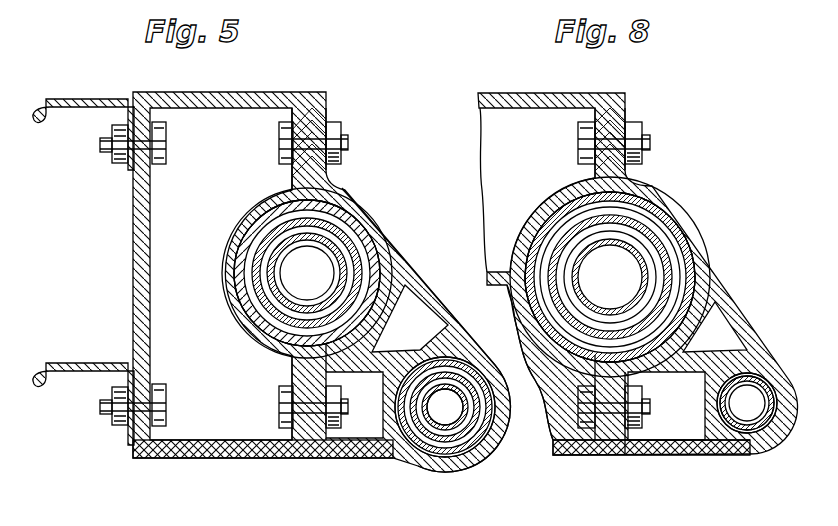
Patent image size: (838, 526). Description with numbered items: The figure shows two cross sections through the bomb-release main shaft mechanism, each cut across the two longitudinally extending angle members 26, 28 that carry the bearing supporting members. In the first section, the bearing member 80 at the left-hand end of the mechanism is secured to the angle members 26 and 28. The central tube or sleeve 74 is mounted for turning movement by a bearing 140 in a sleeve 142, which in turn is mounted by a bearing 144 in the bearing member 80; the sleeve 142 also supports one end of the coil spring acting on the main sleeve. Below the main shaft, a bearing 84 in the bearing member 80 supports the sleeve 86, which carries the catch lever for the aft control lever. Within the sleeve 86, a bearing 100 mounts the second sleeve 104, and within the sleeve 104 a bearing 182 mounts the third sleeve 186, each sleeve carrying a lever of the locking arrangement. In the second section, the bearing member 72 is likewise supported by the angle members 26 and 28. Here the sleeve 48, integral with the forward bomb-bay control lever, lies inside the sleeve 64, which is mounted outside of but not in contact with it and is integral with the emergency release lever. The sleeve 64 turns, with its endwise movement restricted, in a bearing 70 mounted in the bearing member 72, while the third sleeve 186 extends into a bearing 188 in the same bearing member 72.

In FIG. 5, the angle member 26 is at (92, 110).
In FIG. 5, the angle member 28 is at (82, 362).
In FIG. 5, the bearing member 80 is at (345, 207).
In FIG. 5, the sleeve 142 is at (348, 235).
In FIG. 5, the bearing 144 is at (367, 248).
In FIG. 5, the bearing 140 is at (348, 282).
In FIG. 5, the tube or sleeve 74 is at (258, 344).
In FIG. 8, the tube or sleeve 74 is at (615, 248).
In FIG. 5, the bearing 182 is at (458, 357).
In FIG. 5, the bearing 100 is at (483, 423).
In FIG. 5, the third sleeve 186 is at (425, 445).
In FIG. 8, the third sleeve 186 is at (768, 362).
In FIG. 5, the sleeve 86 is at (440, 435).
In FIG. 5, the second sleeve 104 is at (445, 440).
In FIG. 5, the bearing 84 is at (472, 430).
In FIG. 8, the bearing member 72 is at (673, 203).
In FIG. 8, the bearing 70 is at (687, 262).
In FIG. 8, the sleeve 48 is at (663, 278).
In FIG. 8, the sleeve 64 is at (587, 347).
In FIG. 8, the bearing 188 is at (760, 433).